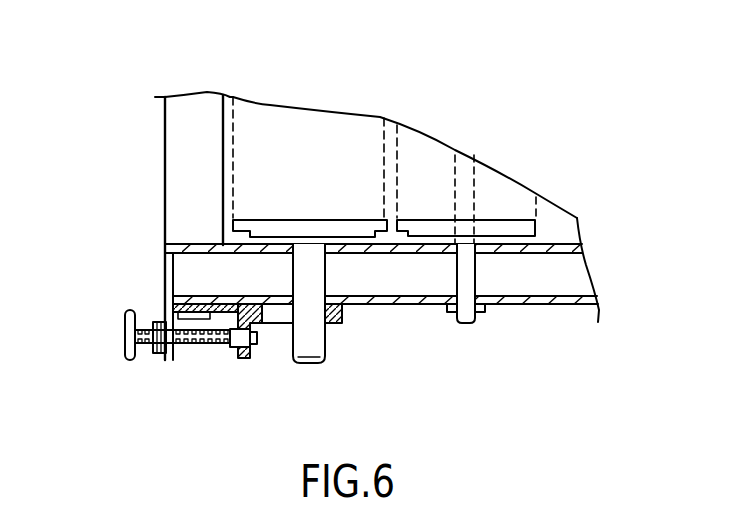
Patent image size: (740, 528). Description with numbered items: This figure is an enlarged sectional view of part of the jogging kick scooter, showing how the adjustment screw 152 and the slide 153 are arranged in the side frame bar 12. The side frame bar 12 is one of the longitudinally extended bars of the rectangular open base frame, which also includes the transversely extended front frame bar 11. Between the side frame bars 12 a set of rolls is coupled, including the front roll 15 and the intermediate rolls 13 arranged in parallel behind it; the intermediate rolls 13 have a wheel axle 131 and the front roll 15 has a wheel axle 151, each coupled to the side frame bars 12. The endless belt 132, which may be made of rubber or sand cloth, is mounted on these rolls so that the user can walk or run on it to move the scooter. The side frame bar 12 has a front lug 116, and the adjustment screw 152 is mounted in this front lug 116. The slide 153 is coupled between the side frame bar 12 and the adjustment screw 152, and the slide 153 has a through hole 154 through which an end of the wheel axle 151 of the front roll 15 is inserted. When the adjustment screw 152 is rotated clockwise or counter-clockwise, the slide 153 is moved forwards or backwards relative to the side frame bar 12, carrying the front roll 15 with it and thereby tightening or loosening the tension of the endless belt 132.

The front frame bar 11 is at (176, 147).
The side frame bar 12 is at (418, 283).
The intermediate roll 13 is at (507, 228).
The front roll 15 is at (357, 224).
The front lug 116 is at (170, 358).
The wheel axle 131 is at (467, 317).
The endless belt 132 is at (390, 157).
The wheel axle 151 is at (310, 348).
The adjustment screw 152 is at (126, 326).
The slide 153 is at (243, 360).
The through hole 154 is at (277, 315).